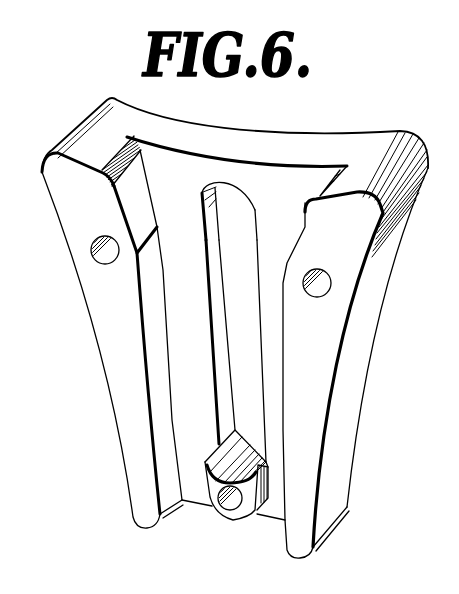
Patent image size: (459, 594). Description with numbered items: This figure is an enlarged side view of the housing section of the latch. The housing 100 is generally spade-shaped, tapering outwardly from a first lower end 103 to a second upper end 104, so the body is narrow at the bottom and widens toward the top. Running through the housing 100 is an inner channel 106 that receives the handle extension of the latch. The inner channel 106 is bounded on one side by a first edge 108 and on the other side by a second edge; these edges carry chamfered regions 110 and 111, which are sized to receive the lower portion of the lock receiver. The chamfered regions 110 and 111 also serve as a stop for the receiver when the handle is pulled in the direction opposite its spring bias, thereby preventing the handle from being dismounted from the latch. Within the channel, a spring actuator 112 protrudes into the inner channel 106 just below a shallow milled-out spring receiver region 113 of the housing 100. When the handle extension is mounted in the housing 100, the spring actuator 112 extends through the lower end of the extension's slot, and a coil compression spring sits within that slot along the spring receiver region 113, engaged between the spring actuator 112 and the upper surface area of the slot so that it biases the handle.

The housing 100 is at (367, 335).
The first lower end 103 is at (275, 521).
The second upper end 104 is at (296, 131).
The inner channel 106 is at (180, 383).
The first edge 108 is at (104, 348).
The chamfered region 110 is at (141, 191).
The chamfered region 111 is at (295, 243).
The spring actuator 112 is at (226, 432).
The spring receiver region 113 is at (252, 221).